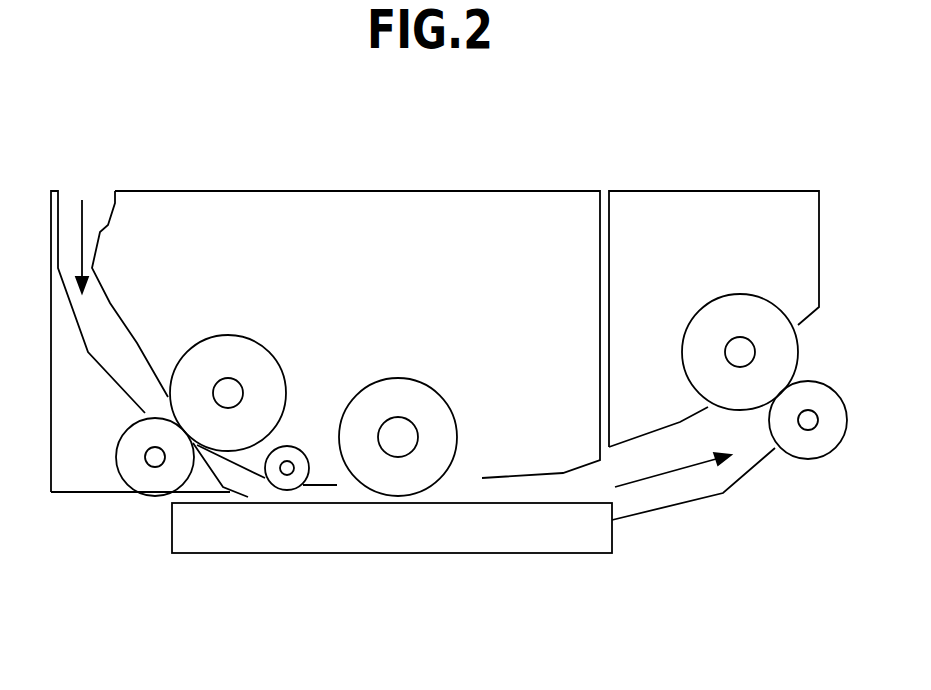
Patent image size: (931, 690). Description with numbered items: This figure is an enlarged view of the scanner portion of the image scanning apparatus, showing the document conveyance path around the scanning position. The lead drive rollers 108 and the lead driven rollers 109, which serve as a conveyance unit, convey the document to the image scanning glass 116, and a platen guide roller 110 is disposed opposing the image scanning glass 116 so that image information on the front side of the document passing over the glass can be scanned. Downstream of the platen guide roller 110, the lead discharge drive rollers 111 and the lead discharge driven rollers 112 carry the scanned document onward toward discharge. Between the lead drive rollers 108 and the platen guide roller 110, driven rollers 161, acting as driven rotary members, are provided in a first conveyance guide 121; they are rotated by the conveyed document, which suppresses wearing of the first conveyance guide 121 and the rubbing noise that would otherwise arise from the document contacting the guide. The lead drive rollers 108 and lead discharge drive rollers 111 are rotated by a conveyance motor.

The lead drive rollers 108 is at (230, 357).
The lead driven rollers 109 is at (152, 480).
The platen guide roller 110 is at (402, 397).
The lead discharge drive rollers 111 is at (740, 308).
The lead discharge driven rollers 112 is at (810, 445).
The image scanning glass 116 is at (388, 535).
The first conveyance guide 121 is at (518, 213).
The driven rollers 161 is at (287, 480).